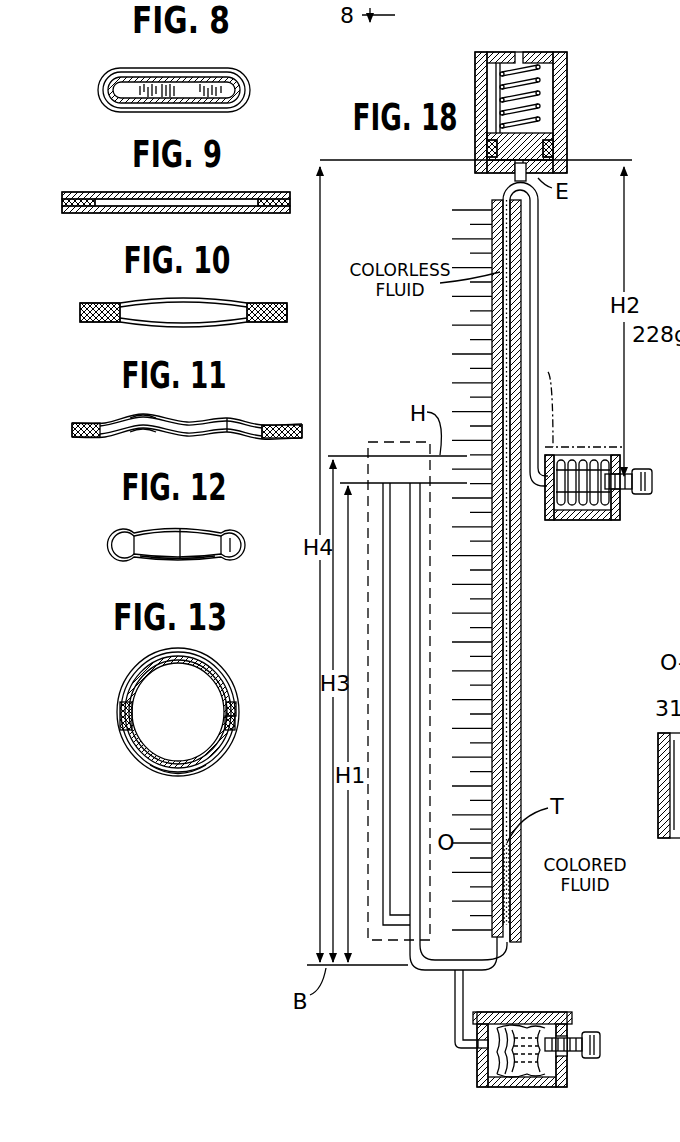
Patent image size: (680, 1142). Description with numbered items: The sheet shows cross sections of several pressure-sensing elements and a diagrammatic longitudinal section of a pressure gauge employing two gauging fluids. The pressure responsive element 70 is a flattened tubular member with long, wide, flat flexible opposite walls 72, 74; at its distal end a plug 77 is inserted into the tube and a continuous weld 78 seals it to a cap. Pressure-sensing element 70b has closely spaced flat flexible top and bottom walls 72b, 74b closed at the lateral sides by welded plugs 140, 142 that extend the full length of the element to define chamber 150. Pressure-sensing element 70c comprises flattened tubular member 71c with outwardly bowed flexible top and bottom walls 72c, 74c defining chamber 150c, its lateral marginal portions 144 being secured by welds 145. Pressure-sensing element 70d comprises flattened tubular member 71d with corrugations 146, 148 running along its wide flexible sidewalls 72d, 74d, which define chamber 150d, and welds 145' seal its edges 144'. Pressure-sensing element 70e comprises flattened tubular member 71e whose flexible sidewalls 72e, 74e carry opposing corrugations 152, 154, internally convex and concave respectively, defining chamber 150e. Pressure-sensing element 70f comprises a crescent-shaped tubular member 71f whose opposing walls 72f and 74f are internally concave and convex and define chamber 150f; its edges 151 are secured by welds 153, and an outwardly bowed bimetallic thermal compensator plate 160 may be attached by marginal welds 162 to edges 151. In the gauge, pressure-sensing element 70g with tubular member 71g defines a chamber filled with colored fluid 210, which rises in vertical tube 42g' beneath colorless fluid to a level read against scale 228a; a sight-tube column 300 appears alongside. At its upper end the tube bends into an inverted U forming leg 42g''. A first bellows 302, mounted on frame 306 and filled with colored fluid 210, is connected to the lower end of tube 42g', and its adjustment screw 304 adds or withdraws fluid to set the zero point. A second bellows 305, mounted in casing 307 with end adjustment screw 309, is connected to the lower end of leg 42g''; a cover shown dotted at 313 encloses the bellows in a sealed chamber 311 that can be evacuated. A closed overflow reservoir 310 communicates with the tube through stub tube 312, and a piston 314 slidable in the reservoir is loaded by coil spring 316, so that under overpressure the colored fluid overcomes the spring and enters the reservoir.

In FIG. 8, the pressure responsive element 70 is at (145, 113).
In FIG. 8, the flat flexible wall 72 is at (153, 68).
In FIG. 8, the flat flexible wall 74 is at (220, 104).
In FIG. 8, the plug 77 is at (228, 90).
In FIG. 8, the continuous weld 78 is at (189, 72).
In FIG. 9, the pressure-sensing element 70b is at (113, 214).
In FIG. 9, the top wall 72b is at (143, 192).
In FIG. 9, the bottom wall 74b is at (215, 214).
In FIG. 9, the chamber 150 is at (226, 192).
In FIG. 9, the welded plug 140 is at (65, 202).
In FIG. 9, the welded plug 142 is at (266, 214).
In FIG. 10, the pressure-sensing element 70c is at (92, 323).
In FIG. 10, the top wall 72c is at (216, 303).
In FIG. 10, the bottom wall 74c is at (156, 326).
In FIG. 10, the chamber 150c is at (165, 304).
In FIG. 10, the lateral marginal portion 144 is at (196, 298).
In FIG. 10, the flattened tubular member 71c is at (270, 322).
In FIG. 10, the weld 145 is at (293, 329).
In FIG. 11, the pressure-sensing element 70d is at (72, 440).
In FIG. 11, the flexible sidewall 72d is at (222, 420).
In FIG. 11, the flexible sidewall 74d is at (222, 437).
In FIG. 11, the corrugation 146 is at (140, 419).
In FIG. 11, the corrugation 148 is at (135, 438).
In FIG. 11, the chamber 150d is at (247, 438).
In FIG. 11, the weld 145' is at (60, 406).
In FIG. 11, the edge 144' is at (288, 460).
In FIG. 11, the flattened tubular member 71d is at (285, 425).
In FIG. 12, the pressure-sensing element 70e is at (100, 553).
In FIG. 12, the flexible sidewall 72e is at (155, 530).
In FIG. 12, the flexible sidewall 74e is at (232, 558).
In FIG. 12, the corrugation 152 is at (133, 558).
In FIG. 12, the corrugation 154 is at (183, 530).
In FIG. 12, the flattened tubular member 71e is at (235, 531).
In FIG. 12, the chamber 150e is at (240, 557).
In FIG. 13, the pressure-sensing element 70f is at (125, 663).
In FIG. 13, the opposing wall 72f is at (207, 655).
In FIG. 13, the chamber 150f is at (216, 670).
In FIG. 13, the opposing wall 74f is at (206, 678).
In FIG. 13, the tubular member 71f is at (118, 690).
In FIG. 13, the marginal weld 162 is at (119, 725).
In FIG. 13, the edge 151 is at (238, 715).
In FIG. 13, the weld 153 is at (239, 727).
In FIG. 13, the bimetallic thermal compensator plate 160 is at (166, 776).
In FIG. 18, the scale 228a is at (467, 358).
In FIG. 18, the indicator column 300 is at (511, 642).
In FIG. 18, the colored fluid 210 is at (501, 866).
In FIG. 18, the vertical tube 42g' is at (552, 226).
In FIG. 18, the leg 42g'' is at (570, 343).
In FIG. 18, the closed reservoir 310 is at (567, 117).
In FIG. 18, the coil spring 316 is at (540, 78).
In FIG. 18, the piston 314 is at (556, 141).
In FIG. 18, the stub tube 312 is at (516, 176).
In FIG. 18, the phantom outline 313 is at (583, 404).
In FIG. 18, the casing 307 is at (596, 522).
In FIG. 18, the second bellows 305 is at (566, 458).
In FIG. 18, the sealed chamber 311 is at (586, 470).
In FIG. 18, the end adjustment screw 309 is at (629, 472).
In FIG. 18, the pressure-sensing element 70g is at (392, 443).
In FIG. 18, the tubular member 71g is at (413, 485).
In FIG. 18, the frame 306 is at (506, 1085).
In FIG. 18, the first bellows 302 is at (535, 1076).
In FIG. 18, the adjustment screw 304 is at (601, 1045).